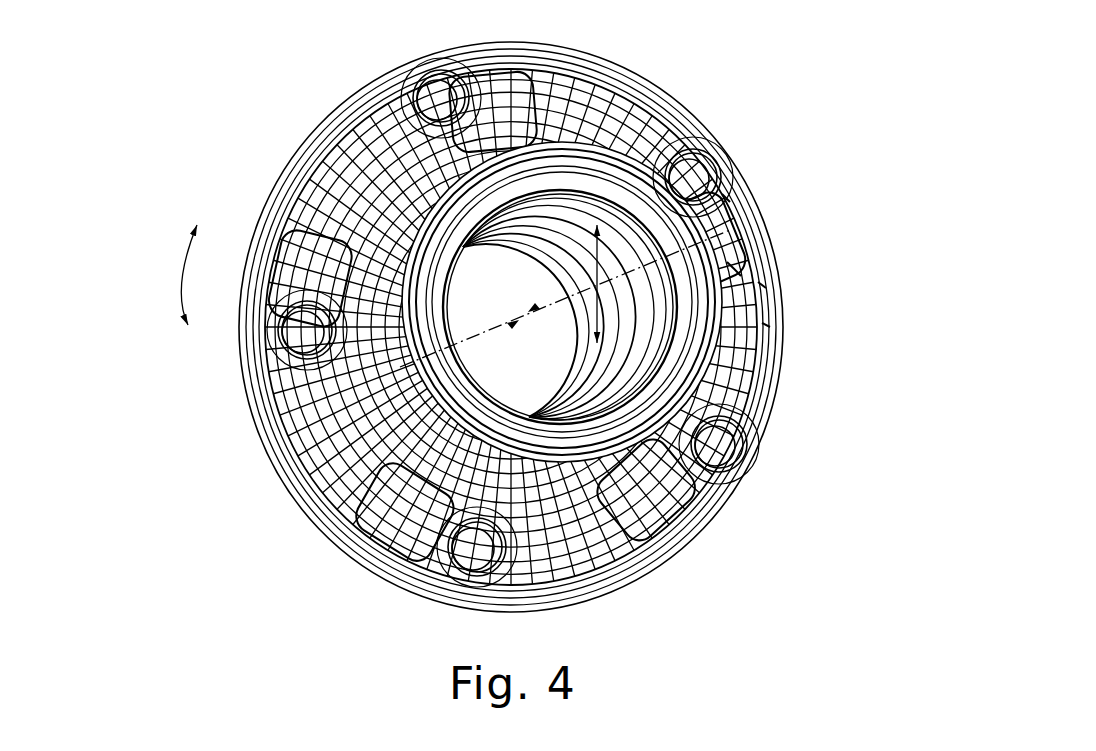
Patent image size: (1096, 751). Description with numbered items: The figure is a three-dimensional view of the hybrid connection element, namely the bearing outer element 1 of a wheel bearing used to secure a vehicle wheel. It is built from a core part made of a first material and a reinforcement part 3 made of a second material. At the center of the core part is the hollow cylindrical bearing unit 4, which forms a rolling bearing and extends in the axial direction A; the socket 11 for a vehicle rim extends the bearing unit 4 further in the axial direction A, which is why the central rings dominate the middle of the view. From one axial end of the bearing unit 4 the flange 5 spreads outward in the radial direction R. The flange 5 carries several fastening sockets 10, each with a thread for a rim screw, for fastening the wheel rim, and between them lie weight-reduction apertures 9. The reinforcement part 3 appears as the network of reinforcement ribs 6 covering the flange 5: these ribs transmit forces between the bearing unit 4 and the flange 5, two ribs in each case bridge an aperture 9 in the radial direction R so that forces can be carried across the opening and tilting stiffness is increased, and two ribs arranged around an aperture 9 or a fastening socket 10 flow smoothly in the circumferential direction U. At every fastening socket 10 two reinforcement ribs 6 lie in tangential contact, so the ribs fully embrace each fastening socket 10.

The bearing outer element 1 is at (764, 86).
The reinforcement part 3 is at (313, 187).
The bearing unit 4 is at (431, 360).
The flange 5 is at (363, 568).
The reinforcement ribs 6 is at (728, 198).
The weight-reduction aperture 9 is at (734, 267).
The fastening socket 10 is at (694, 161).
The socket 11 is at (470, 173).
The axial direction A is at (520, 314).
The radial direction R is at (599, 311).
The circumferential direction U is at (180, 282).